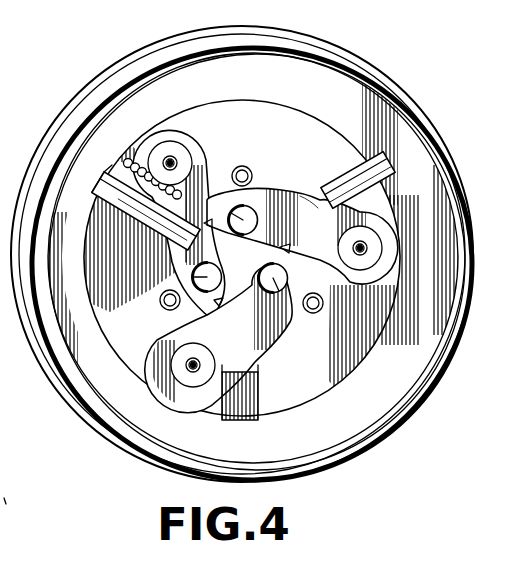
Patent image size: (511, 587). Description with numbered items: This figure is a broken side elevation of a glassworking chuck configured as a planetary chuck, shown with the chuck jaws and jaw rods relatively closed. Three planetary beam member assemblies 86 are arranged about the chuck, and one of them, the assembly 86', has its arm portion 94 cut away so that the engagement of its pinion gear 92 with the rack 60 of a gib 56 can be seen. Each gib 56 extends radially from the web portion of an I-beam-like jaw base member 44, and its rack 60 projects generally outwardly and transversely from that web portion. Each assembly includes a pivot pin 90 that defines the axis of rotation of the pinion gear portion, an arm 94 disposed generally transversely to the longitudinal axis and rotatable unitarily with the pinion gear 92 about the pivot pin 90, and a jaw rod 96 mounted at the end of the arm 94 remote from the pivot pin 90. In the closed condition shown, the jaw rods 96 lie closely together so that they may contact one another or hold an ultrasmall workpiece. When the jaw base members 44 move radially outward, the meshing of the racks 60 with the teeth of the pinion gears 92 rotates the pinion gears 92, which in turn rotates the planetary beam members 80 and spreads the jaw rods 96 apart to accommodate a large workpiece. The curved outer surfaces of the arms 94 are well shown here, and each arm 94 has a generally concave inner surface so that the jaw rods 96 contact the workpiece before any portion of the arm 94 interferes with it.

The jaw base member 44 is at (140, 208).
The gib 56 is at (104, 176).
The rack 60 is at (110, 170).
The planetary beam member 80 is at (313, 191).
The planetary beam member assembly 86 is at (200, 333).
The planetary beam member assembly with arm cut away 86' is at (297, 186).
The pivot pin 90 is at (171, 160).
The pinion gear 92 is at (127, 155).
The arm 94 is at (299, 200).
The jaw rod 96 is at (231, 213).